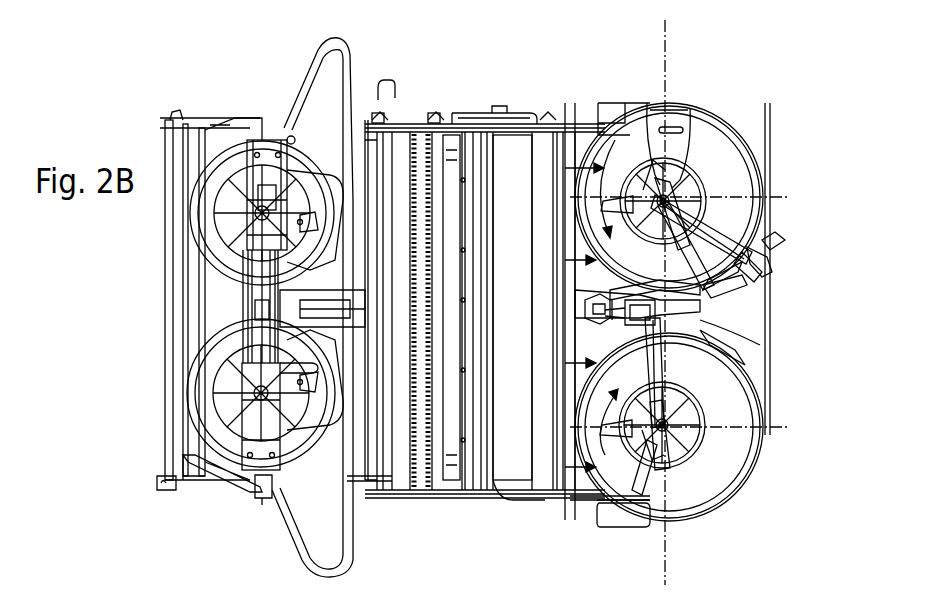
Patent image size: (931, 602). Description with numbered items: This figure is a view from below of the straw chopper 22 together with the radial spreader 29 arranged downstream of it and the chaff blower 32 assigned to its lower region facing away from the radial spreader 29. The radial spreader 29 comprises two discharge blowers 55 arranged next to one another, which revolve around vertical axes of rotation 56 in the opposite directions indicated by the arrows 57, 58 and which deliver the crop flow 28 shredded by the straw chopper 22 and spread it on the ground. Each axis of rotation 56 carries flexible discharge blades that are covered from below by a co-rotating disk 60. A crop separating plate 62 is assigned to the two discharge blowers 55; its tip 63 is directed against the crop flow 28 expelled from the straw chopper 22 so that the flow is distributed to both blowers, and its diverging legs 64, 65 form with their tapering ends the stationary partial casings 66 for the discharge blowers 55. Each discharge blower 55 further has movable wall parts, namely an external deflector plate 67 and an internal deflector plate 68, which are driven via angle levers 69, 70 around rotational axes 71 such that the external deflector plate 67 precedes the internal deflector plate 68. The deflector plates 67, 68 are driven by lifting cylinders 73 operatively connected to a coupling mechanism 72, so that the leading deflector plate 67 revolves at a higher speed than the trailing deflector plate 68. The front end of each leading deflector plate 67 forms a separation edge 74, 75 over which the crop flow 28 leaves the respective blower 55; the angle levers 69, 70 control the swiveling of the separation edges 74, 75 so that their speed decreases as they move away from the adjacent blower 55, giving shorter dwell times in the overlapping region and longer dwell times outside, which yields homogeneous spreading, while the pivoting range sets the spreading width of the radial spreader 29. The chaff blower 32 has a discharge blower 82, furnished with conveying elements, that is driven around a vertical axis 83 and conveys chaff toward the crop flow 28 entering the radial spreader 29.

The straw chopper 22 is at (456, 98).
The crop flow 28 is at (575, 122).
The radial spreader 29 is at (679, 72).
The chaff blower 32 is at (197, 512).
The discharge blower 55 is at (723, 153).
The axis of rotation 56 is at (665, 205).
The direction arrow 57 is at (590, 520).
The direction arrow 58 is at (640, 178).
The co-rotating disk 60 is at (714, 187).
The crop separating plate 62 is at (570, 317).
The tip 63 is at (540, 360).
The diverging leg 64 is at (705, 292).
The diverging leg 65 is at (700, 330).
The stationary partial casing 66 is at (660, 320).
The external deflector plate 67 is at (765, 248).
The internal deflector plate 68 is at (740, 280).
The angle lever 69 is at (740, 207).
The angle lever 70 is at (745, 262).
The rotational axis 71 is at (640, 232).
The coupling mechanism 72 is at (660, 202).
The lifting cylinder 73 is at (670, 185).
The separation edge 74 is at (770, 228).
The separation edge 75 is at (755, 340).
The discharge blower 82 is at (310, 182).
The vertical axis 83 is at (262, 236).